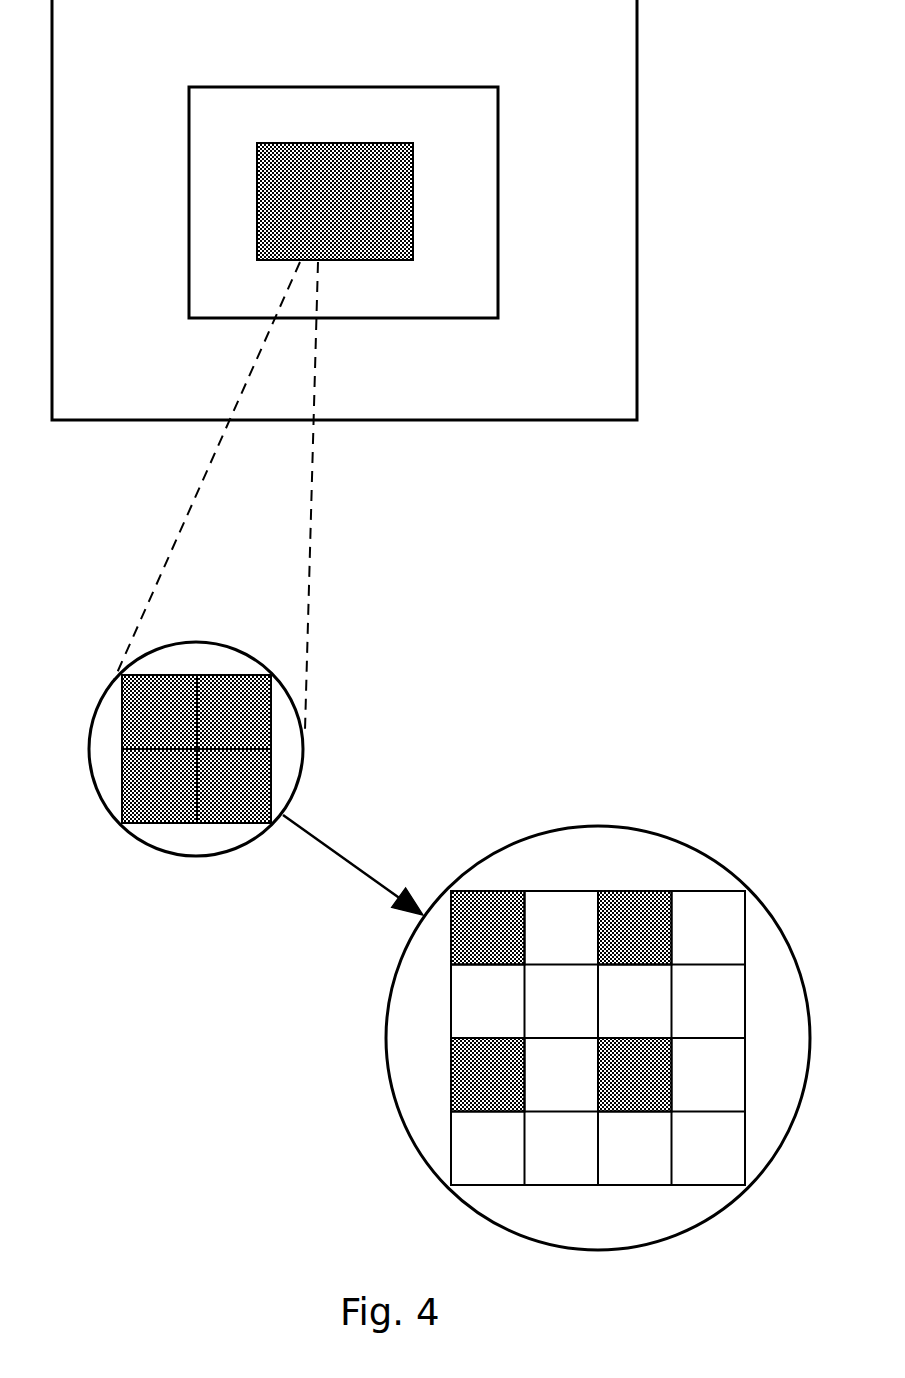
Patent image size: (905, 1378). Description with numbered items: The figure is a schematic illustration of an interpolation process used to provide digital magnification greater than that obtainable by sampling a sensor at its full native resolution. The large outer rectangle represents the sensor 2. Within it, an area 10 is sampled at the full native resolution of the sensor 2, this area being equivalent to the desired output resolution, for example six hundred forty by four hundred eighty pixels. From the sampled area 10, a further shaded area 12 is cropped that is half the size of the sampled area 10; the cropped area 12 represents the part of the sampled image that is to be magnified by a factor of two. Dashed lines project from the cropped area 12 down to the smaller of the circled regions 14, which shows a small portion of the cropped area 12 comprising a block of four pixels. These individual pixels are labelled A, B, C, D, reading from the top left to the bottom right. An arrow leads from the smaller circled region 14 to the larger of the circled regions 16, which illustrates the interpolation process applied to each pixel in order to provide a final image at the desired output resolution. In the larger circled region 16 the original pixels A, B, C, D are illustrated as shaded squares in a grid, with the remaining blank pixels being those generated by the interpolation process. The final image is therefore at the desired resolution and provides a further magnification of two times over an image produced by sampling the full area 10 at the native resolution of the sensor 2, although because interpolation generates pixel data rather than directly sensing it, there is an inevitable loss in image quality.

The sensor 2 is at (637, 195).
The area 10 is at (498, 199).
The cropped area 12 is at (413, 199).
The smaller circled region 14 is at (148, 845).
The larger circled region 16 is at (790, 947).
The pixel A is at (135, 725).
The pixel B is at (236, 675).
The pixel C is at (128, 770).
The pixel D is at (226, 823).